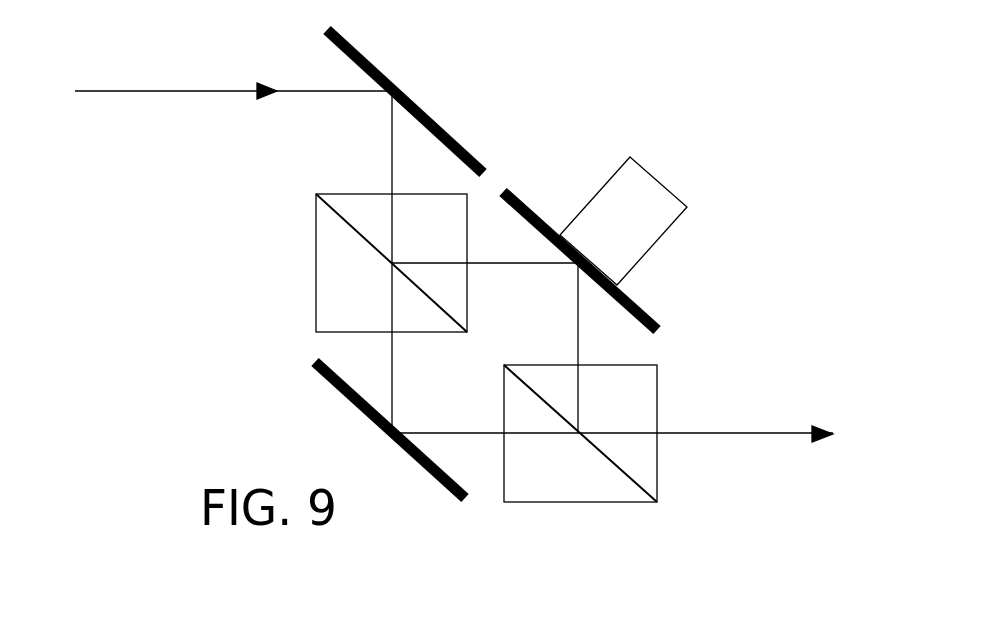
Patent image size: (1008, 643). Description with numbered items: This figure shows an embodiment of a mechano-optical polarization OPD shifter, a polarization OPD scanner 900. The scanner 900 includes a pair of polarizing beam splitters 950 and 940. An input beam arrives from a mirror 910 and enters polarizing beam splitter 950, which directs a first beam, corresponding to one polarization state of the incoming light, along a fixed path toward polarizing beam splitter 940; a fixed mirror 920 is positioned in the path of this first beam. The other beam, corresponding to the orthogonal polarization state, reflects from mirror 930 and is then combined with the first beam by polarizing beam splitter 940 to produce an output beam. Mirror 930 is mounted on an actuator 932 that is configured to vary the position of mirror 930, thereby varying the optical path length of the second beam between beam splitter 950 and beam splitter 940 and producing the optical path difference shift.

The polarization OPD scanner 900 is at (182, 375).
The mirror 910 is at (370, 62).
The fixed mirror 920 is at (333, 382).
The mirror 930 is at (648, 313).
The actuator 932 is at (668, 226).
The polarizing beam splitter 940 is at (658, 400).
The polarizing beam splitter 950 is at (316, 277).